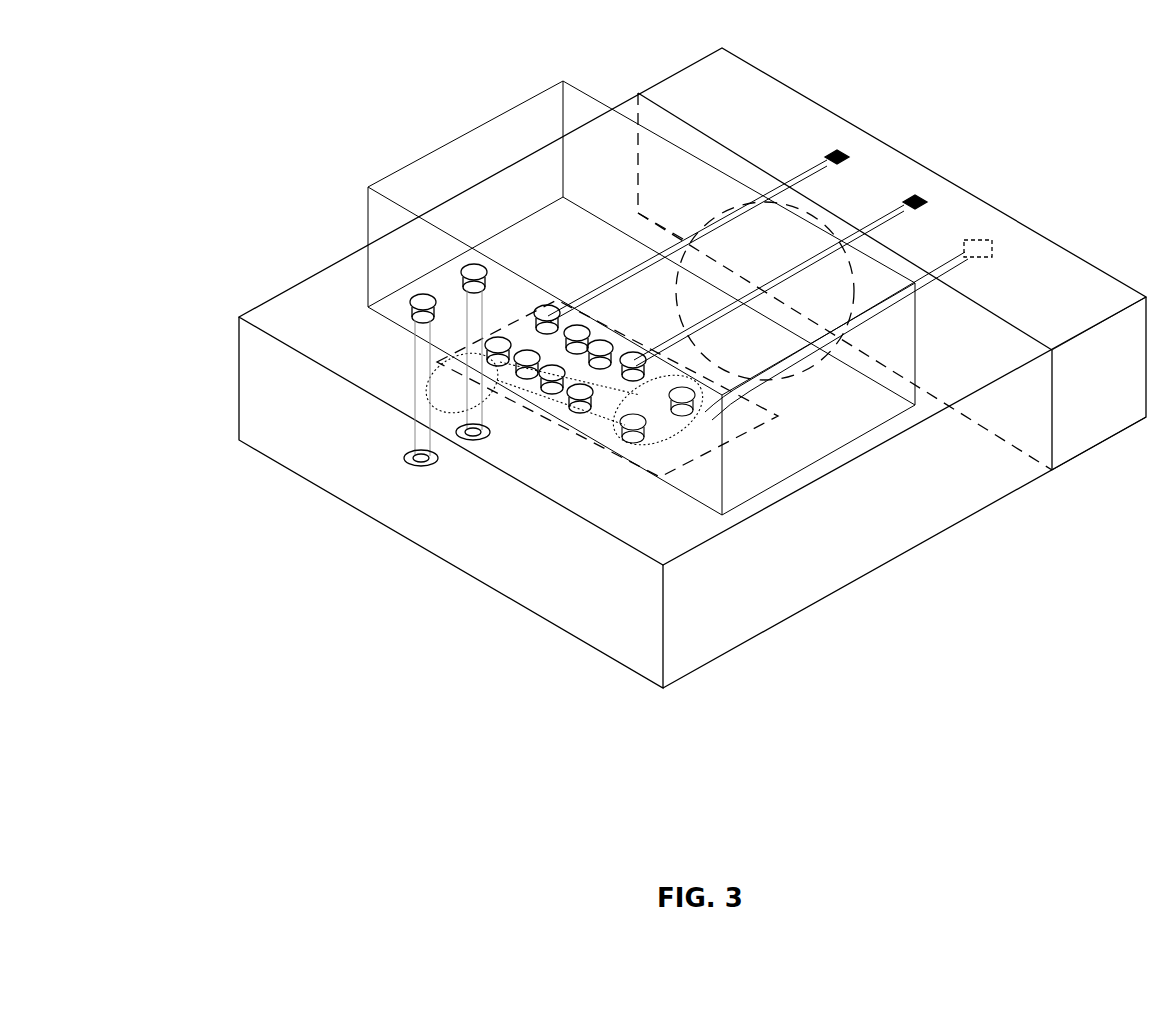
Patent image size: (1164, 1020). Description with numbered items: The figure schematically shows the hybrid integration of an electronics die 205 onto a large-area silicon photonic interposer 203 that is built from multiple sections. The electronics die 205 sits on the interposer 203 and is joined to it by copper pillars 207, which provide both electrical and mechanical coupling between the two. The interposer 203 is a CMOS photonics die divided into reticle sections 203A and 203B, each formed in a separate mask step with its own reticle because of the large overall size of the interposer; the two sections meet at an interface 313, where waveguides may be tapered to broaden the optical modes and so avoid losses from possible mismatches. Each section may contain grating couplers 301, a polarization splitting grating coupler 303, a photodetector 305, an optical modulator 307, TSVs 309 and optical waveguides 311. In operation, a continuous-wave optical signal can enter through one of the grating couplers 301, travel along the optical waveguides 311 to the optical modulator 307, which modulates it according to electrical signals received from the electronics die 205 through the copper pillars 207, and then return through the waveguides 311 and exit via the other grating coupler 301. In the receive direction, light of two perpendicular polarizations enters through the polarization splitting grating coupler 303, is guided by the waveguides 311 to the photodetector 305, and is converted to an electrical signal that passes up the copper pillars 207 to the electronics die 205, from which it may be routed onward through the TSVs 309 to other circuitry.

The silicon photonic interposer 203 is at (212, 360).
The reticle section 203A is at (920, 513).
The reticle section 203B is at (1132, 403).
The electronics die 205 is at (812, 450).
The copper pillars 207 is at (488, 340).
The grating couplers 301 is at (908, 193).
The polarization splitting grating coupler 303 is at (981, 235).
The photodetector 305 is at (690, 448).
The optical modulator 307 is at (525, 417).
The TSVs 309 is at (416, 360).
The optical waveguides 311 is at (693, 198).
The interface 313 is at (1002, 313).